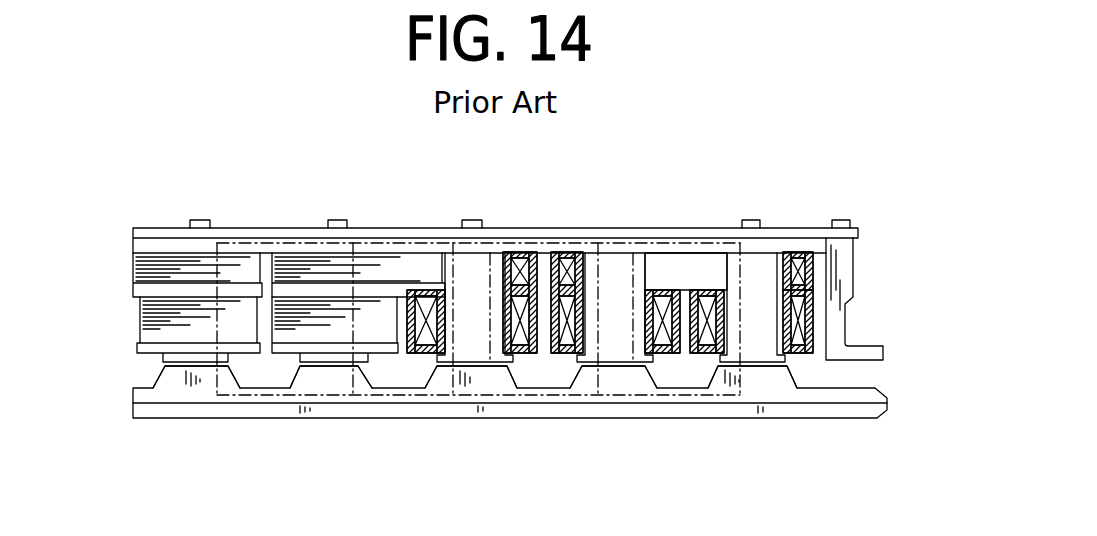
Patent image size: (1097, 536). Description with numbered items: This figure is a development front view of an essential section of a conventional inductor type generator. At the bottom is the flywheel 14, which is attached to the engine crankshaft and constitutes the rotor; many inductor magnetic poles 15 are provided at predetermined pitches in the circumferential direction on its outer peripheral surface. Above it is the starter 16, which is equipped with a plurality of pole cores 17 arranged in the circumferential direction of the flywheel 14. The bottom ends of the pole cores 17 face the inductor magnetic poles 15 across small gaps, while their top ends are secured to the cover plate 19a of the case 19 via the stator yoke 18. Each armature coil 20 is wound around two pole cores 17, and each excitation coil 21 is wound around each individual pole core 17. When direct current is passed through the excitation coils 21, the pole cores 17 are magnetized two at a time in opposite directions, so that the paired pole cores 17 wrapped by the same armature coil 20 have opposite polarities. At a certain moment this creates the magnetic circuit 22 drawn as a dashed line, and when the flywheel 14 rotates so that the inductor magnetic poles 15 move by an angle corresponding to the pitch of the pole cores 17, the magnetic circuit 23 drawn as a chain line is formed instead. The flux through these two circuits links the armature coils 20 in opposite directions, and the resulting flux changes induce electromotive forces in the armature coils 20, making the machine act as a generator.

The flywheel 14 is at (843, 410).
The inductor magnetic poles 15 is at (749, 388).
The starter 16 is at (188, 252).
The pole cores 17 is at (473, 272).
The stator yoke 18 is at (742, 247).
The case 19 is at (866, 278).
The cover plate 19a is at (822, 240).
The armature coil 20 is at (156, 272).
The excitation coil 21 is at (158, 326).
The magnetic circuit 22 is at (313, 406).
The magnetic circuit 23 is at (468, 400).